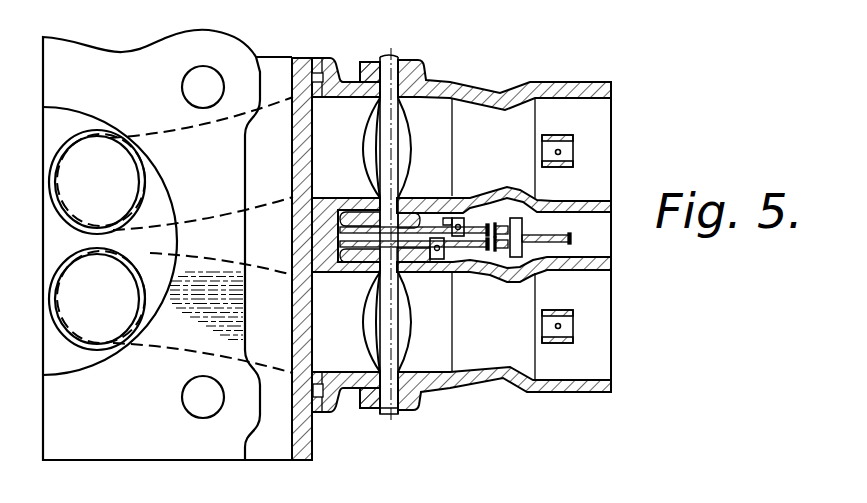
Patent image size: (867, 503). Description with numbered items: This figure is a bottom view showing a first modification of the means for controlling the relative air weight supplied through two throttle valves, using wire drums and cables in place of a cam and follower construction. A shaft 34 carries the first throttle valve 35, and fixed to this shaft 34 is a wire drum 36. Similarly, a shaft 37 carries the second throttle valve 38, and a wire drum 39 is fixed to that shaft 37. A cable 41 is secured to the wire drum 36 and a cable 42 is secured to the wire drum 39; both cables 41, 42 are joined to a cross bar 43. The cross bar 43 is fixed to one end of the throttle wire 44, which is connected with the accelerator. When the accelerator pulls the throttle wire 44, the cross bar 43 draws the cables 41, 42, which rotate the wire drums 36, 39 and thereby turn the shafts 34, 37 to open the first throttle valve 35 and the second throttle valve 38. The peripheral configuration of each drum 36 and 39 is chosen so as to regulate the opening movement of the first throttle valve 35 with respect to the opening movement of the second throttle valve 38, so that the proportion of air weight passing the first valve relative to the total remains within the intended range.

The shaft 34 is at (390, 60).
The first throttle valve 35 is at (366, 138).
The wire drum 36 is at (353, 210).
The shaft 37 is at (390, 416).
The second throttle valve 38 is at (368, 348).
The wire drum 39 is at (347, 272).
The cable 41 is at (500, 217).
The cable 42 is at (503, 257).
The cross bar 43 is at (523, 230).
The throttle wire 44 is at (571, 238).